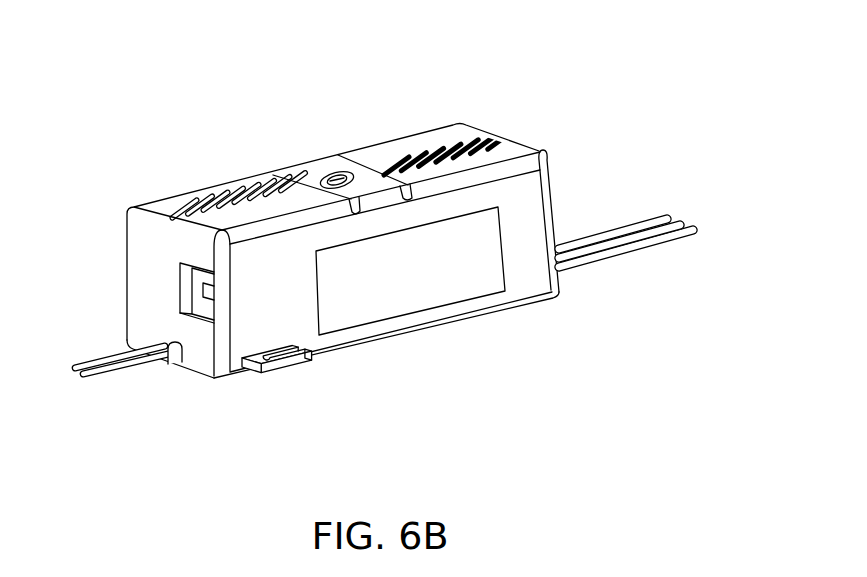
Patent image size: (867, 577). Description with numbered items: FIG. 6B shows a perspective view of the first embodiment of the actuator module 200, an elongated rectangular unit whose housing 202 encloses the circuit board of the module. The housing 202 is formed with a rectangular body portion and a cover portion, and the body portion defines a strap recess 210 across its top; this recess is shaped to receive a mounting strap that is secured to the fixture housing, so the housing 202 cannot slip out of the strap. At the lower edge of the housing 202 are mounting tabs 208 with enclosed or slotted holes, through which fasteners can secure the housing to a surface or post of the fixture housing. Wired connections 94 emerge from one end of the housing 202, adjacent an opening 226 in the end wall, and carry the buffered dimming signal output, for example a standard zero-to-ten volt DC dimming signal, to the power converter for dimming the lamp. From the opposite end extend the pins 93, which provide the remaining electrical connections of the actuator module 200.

The actuator module 200 is at (372, 228).
The housing 202 is at (558, 173).
The strap recess 210 is at (318, 171).
The opening 226 is at (160, 294).
The mounting tabs 208 is at (282, 383).
The output pins 93 is at (600, 266).
The wired connections 94 is at (131, 366).